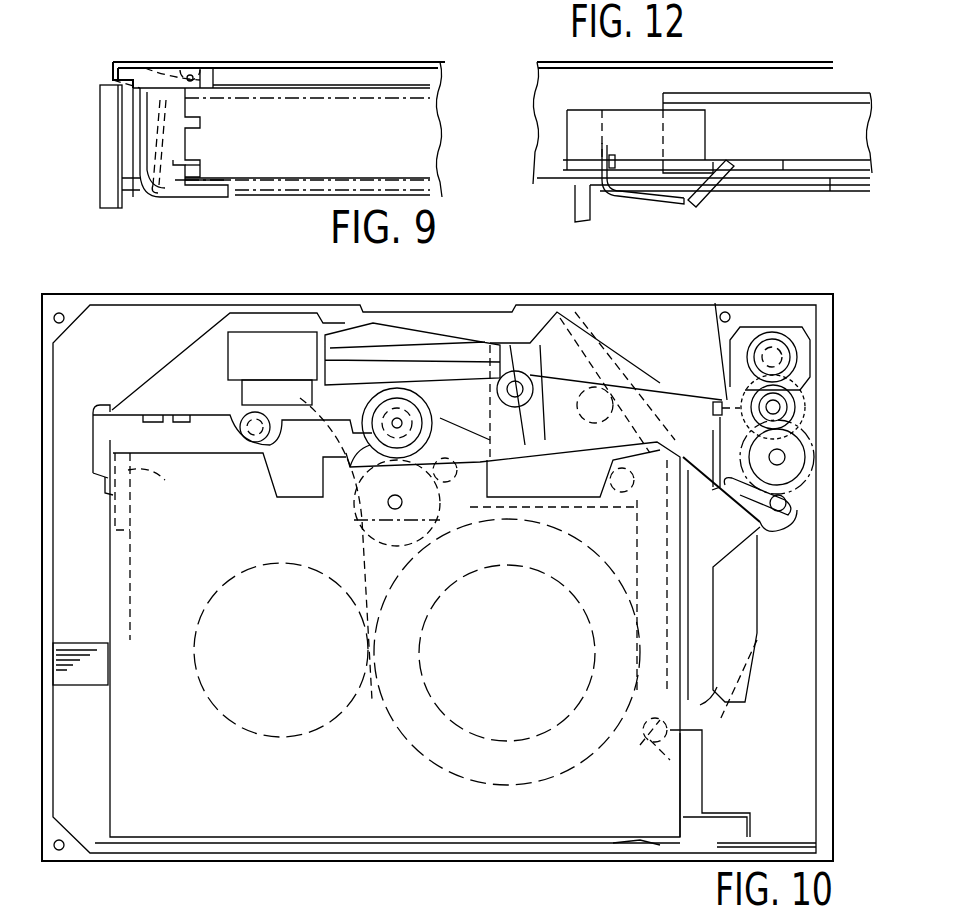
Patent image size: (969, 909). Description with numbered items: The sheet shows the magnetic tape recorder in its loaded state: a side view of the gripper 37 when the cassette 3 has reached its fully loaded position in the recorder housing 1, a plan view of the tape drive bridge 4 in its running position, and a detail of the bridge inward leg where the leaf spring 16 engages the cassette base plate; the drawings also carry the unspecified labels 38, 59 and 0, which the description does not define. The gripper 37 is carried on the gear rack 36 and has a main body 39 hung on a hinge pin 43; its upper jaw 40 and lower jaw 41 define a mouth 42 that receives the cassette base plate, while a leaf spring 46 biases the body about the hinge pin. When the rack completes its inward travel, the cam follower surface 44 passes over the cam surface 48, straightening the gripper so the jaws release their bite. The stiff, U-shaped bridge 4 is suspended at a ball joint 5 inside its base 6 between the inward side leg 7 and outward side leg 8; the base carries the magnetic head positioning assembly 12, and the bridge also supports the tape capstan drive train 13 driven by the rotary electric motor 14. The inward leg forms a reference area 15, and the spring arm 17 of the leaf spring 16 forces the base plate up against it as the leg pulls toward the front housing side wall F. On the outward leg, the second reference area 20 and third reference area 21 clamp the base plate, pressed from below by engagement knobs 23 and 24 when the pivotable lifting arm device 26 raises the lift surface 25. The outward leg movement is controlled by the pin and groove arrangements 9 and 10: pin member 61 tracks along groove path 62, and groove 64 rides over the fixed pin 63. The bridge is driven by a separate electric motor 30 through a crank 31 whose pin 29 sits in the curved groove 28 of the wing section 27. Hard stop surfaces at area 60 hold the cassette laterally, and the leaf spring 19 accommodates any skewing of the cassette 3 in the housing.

In FIG. 9, the recorder housing 1 is at (290, 62).
In FIG. 12, the recorder housing 1 is at (706, 62).
In FIG. 10, the recorder housing 1 is at (150, 870).
In FIG. 9, the tape cassette 3 is at (377, 143).
In FIG. 12, the tape cassette 3 is at (825, 145).
In FIG. 10, the tape cassette 3 is at (162, 806).
In FIG. 12, the tape drive bridge 4 is at (590, 108).
In FIG. 10, the tape drive bridge 4 is at (621, 386).
In FIG. 10, the ball joint 5 is at (270, 427).
In FIG. 10, the bridge base 6 is at (192, 385).
In FIG. 12, the inward side leg 7 is at (637, 108).
In FIG. 10, the inward side leg 7 is at (100, 460).
In FIG. 10, the outward side leg 8 is at (712, 615).
In FIG. 10, the pin and groove arrangement 9 is at (725, 709).
In FIG. 10, the pin and groove arrangement 10 is at (712, 409).
In FIG. 10, the magnetic head positioning assembly 12 is at (405, 345).
In FIG. 10, the tape capstan drive train 13 is at (407, 439).
In FIG. 10, the rotary electric motor 14 is at (488, 392).
In FIG. 12, the reference area 15 is at (682, 157).
In FIG. 10, the reference area 15 is at (162, 482).
In FIG. 12, the leaf spring arrangement 16 is at (648, 206).
In FIG. 12, the spring arm 17 is at (705, 200).
In FIG. 10, the spring arm 17 is at (128, 500).
In FIG. 10, the leaf spring 19 is at (645, 860).
In FIG. 10, the second reference area 20 is at (620, 560).
In FIG. 10, the third reference area 21 is at (340, 905).
In FIG. 10, the engagement knob 23 is at (640, 512).
In FIG. 10, the engagement knob 24 is at (660, 745).
In FIG. 10, the lift surface 25 is at (504, 899).
In FIG. 10, the lifting arm device 26 is at (549, 897).
In FIG. 10, the wing section 27 is at (772, 535).
In FIG. 10, the curved groove 28 is at (747, 493).
In FIG. 10, the pin 29 is at (790, 505).
In FIG. 10, the rotary electric motor 30 is at (800, 350).
In FIG. 10, the crank 31 is at (790, 452).
In FIG. 9, the gear rack 36 is at (368, 75).
In FIG. 9, the gripper 37 is at (135, 128).
In FIG. 9, the lower wall 38 is at (265, 195).
In FIG. 9, the main body 39 is at (150, 195).
In FIG. 9, the upper jaw 40 is at (200, 163).
In FIG. 9, the lower jaw 41 is at (220, 197).
In FIG. 9, the mouth 42 is at (183, 195).
In FIG. 9, the hinge pin 43 is at (193, 76).
In FIG. 9, the cam follower surface 44 is at (150, 65).
In FIG. 9, the leaf spring 46 is at (217, 132).
In FIG. 9, the cam surface 48 is at (115, 78).
In FIG. 10, the cover block 59 is at (581, 404).
In FIG. 10, the hard stop area 60 is at (292, 462).
In FIG. 10, the pin member 61 is at (720, 678).
In FIG. 10, the groove path 62 is at (745, 680).
In FIG. 10, the pin 63 is at (720, 397).
In FIG. 10, the groove 64 is at (712, 432).
In FIG. 10, the frame 0 is at (828, 550).
In FIG. 10, the front housing side wall F is at (555, 295).
In FIG. 9, the direction I is at (100, 182).
In FIG. 10, the direction I is at (46, 625).
In FIG. 10, the direction R is at (455, 860).